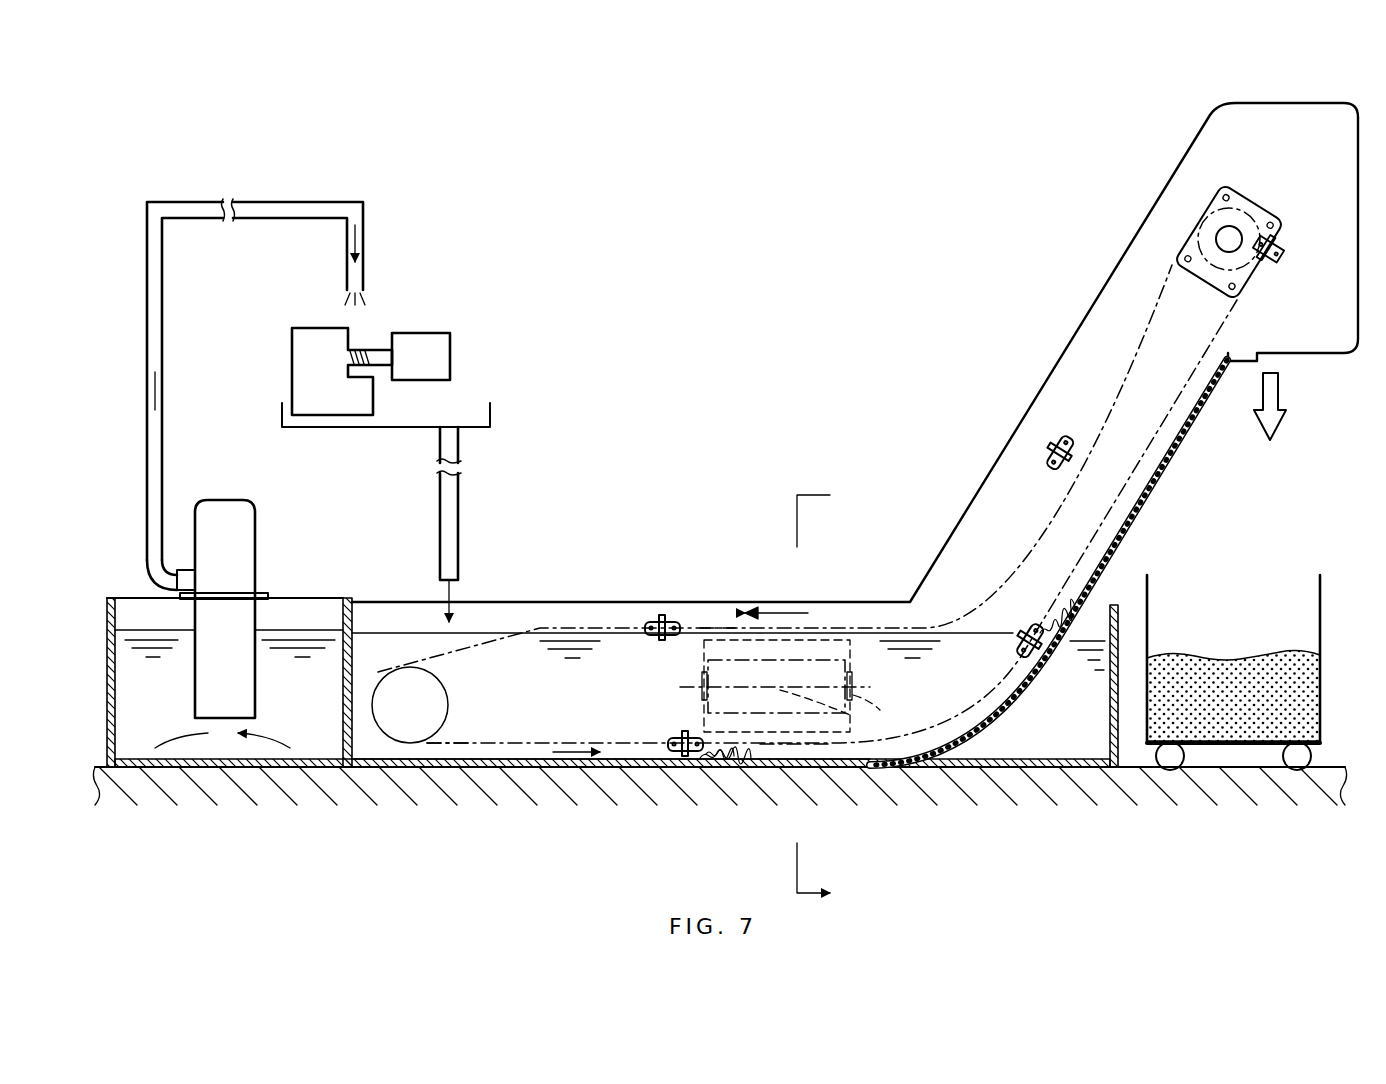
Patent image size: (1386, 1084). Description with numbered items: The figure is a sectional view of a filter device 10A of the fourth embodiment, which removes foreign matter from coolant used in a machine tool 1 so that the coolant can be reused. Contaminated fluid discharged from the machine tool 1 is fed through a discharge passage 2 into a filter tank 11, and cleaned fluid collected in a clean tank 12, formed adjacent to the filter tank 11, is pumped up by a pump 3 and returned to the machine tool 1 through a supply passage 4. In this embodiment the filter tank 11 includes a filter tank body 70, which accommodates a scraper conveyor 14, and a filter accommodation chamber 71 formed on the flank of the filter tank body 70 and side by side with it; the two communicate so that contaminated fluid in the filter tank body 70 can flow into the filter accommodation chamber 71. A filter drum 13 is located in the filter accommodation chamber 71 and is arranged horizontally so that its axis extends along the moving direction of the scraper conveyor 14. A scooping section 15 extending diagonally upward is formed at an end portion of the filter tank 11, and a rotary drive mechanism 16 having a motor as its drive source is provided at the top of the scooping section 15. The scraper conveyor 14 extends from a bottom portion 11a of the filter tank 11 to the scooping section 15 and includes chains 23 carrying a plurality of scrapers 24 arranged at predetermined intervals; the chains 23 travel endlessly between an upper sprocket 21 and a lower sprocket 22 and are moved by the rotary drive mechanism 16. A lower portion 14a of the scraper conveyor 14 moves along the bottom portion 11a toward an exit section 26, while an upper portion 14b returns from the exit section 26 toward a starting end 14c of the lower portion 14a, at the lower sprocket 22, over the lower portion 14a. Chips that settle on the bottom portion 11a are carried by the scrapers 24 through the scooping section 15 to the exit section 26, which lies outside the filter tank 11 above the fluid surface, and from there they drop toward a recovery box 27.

The machine tool 1 is at (470, 335).
The discharge passage 2 is at (458, 520).
The pump 3 is at (255, 543).
The supply passage 4 is at (147, 305).
The filter device 10A is at (642, 493).
The filter tank 11 is at (596, 602).
The bottom portion 11a is at (520, 757).
The clean tank 12 is at (320, 598).
The filter drum 13 is at (818, 657).
The scraper conveyor 14 is at (580, 610).
The lower portion 14a is at (798, 748).
The upper portion 14b is at (718, 628).
The starting end 14c is at (427, 742).
The scooping section 15 is at (1167, 470).
The rotary drive mechanism 16 is at (1208, 197).
The upper sprocket 21 is at (1250, 208).
The lower sprocket 22 is at (395, 723).
The chains 23 is at (1080, 417).
The scrapers 24 is at (659, 617).
The exit section 26 is at (1292, 353).
The recovery box 27 is at (1320, 612).
The filter tank body 70 is at (648, 705).
The filter accommodation chamber 71 is at (853, 695).